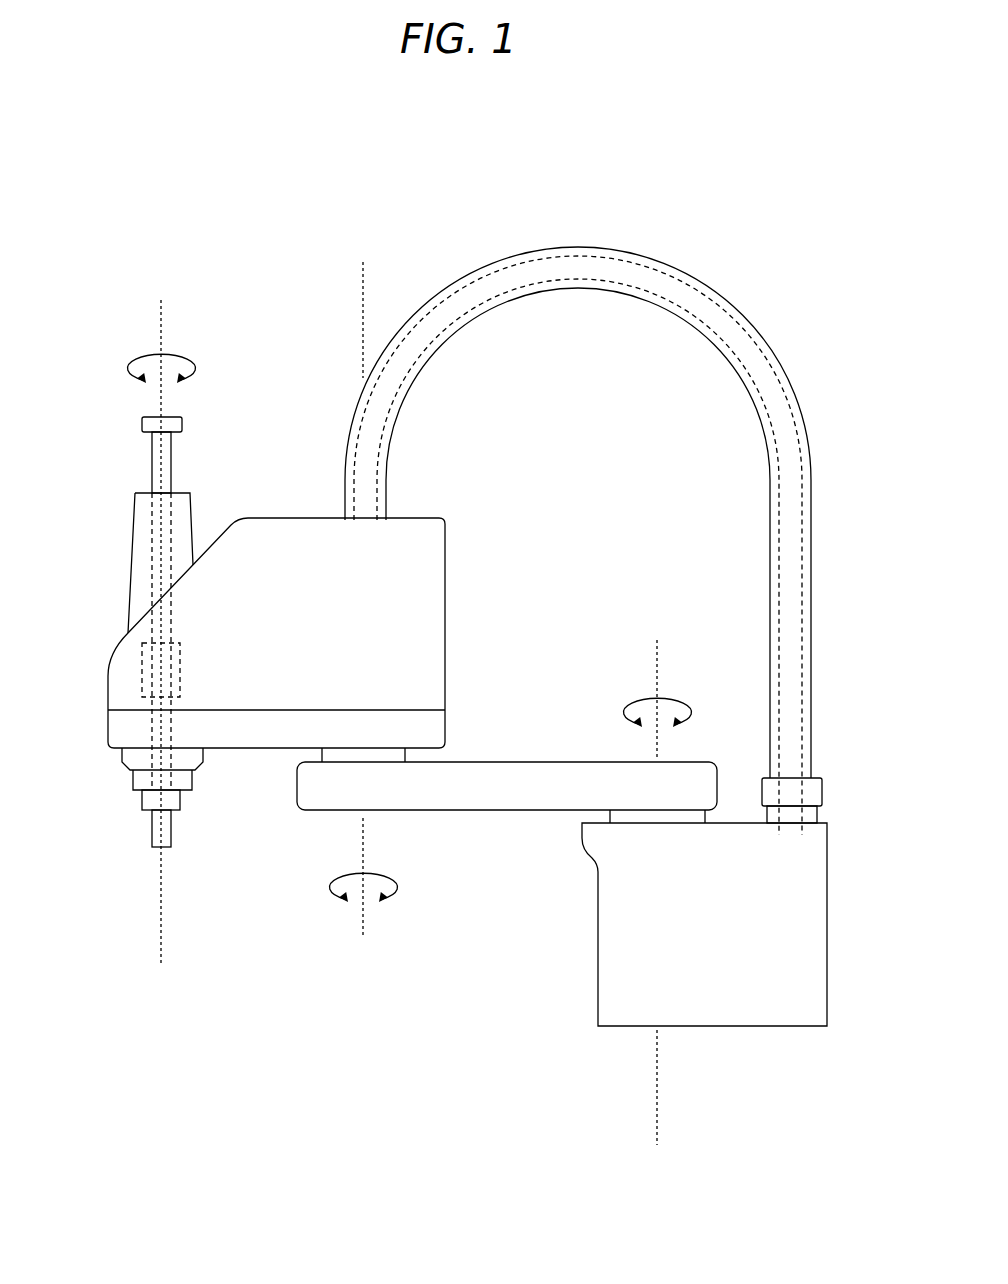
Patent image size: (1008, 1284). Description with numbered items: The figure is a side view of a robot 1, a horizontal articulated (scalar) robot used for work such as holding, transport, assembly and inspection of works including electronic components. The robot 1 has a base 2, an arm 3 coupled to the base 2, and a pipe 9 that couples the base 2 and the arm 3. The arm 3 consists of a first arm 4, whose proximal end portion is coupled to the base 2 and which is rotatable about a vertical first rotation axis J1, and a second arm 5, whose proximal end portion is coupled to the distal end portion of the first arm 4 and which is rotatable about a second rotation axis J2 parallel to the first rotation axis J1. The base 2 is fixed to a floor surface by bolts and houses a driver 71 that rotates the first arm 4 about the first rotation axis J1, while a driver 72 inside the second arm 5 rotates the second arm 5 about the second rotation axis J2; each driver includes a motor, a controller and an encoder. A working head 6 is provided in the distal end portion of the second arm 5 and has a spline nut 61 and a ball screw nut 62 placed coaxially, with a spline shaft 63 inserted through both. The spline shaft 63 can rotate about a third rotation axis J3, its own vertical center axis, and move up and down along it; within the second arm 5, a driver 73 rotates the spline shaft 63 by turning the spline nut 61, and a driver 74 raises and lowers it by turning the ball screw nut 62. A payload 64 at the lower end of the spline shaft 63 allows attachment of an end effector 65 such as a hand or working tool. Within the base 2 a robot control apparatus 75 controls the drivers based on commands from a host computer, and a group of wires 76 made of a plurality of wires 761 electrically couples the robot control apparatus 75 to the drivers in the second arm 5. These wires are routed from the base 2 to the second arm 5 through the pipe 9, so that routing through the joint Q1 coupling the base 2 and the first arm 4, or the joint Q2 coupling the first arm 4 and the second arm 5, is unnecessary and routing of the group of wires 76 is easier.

The robot 1 is at (720, 172).
The base 2 is at (815, 920).
The arm 3 is at (478, 813).
The first arm 4 is at (530, 778).
The second arm 5 is at (243, 538).
The working head 6 is at (131, 552).
The spline nut 61 is at (160, 693).
The ball screw nut 62 is at (132, 655).
The spline shaft 63 is at (161, 458).
The payload 64 is at (150, 797).
The end effector 65 is at (160, 828).
The driver 71 is at (660, 848).
The driver 72 is at (400, 690).
The driver 73 is at (400, 653).
The driver 74 is at (400, 613).
The robot control apparatus 75 is at (733, 965).
The group of wires 76 is at (640, 382).
The wire 761 is at (557, 290).
The pipe 9 is at (742, 300).
The first rotation axis J1 is at (657, 655).
The second rotation axis J2 is at (363, 920).
The third rotation axis J3 is at (161, 310).
The joint Q1 is at (680, 812).
The joint Q2 is at (372, 757).